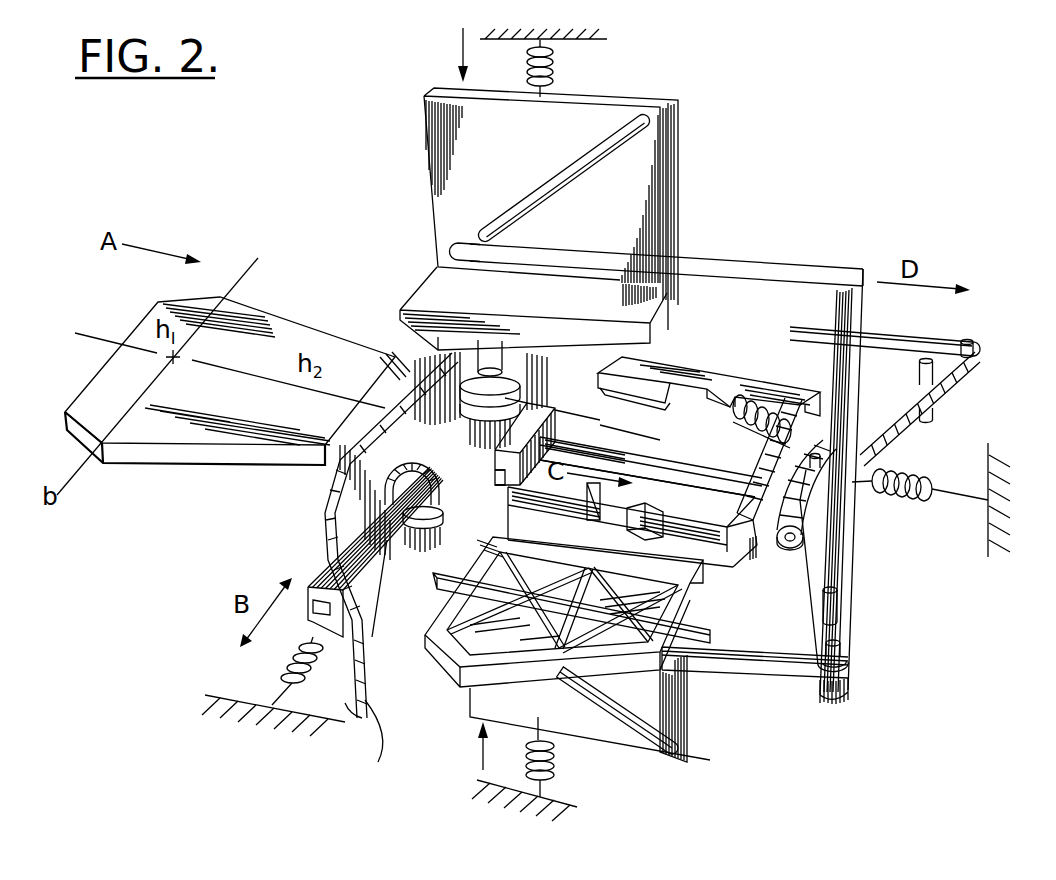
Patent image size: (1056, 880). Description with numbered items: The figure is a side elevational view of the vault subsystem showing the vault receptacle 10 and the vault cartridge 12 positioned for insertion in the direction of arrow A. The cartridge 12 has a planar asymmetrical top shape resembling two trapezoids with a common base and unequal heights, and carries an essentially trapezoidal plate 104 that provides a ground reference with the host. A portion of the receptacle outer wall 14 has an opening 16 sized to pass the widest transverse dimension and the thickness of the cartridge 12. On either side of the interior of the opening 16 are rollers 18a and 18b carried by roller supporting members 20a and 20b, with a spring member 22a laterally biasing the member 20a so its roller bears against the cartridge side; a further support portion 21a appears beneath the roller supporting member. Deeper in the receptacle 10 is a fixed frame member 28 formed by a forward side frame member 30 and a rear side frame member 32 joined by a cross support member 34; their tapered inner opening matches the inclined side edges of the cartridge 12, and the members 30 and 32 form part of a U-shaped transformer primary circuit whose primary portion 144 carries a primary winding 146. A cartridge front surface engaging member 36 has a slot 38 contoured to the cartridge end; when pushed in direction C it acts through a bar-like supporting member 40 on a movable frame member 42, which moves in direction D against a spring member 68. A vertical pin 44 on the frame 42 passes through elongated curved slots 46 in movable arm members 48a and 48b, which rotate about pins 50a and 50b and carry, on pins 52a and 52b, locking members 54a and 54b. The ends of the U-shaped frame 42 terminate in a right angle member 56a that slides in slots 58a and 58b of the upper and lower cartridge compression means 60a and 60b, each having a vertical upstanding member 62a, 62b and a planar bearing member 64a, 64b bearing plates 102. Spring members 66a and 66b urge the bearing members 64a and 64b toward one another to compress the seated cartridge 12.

The vault receptacle 10 is at (876, 191).
The vault cartridge 12 is at (92, 376).
The receptacle outer wall 14 is at (292, 740).
The opening 16 is at (367, 490).
The roller 18a is at (429, 537).
The roller 18b is at (481, 420).
The roller supporting member 20a is at (333, 568).
The roller supporting member 20b is at (534, 357).
The support 21a is at (396, 588).
The spring member 22a is at (290, 662).
The fixed frame member 28 is at (711, 402).
The forward side frame member 30 is at (667, 360).
The rear side frame member 32 is at (680, 436).
The cross support member 34 is at (783, 458).
The cartridge front surface engaging member 36 is at (535, 402).
The slot 38 is at (494, 474).
The bar-like supporting member 40 is at (567, 437).
The movable frame member 42 is at (757, 262).
The vertical pin 44 is at (828, 478).
The elongated curved slot 46 is at (803, 532).
The movable arm member 48a is at (856, 571).
The movable arm member 48b is at (890, 420).
The pin 50a is at (846, 612).
The pin 50b is at (940, 377).
The pin 52a is at (850, 650).
The pin 52b is at (970, 342).
The locking member 54a is at (773, 655).
The locking member 54b is at (918, 320).
The right angle member 56a is at (487, 232).
The slot 58a is at (647, 116).
The slot 58b is at (662, 757).
The upper cartridge compression means 60a is at (698, 137).
The lower cartridge compression means 60b is at (732, 726).
The vertical upstanding member 62a is at (679, 180).
The vertical upstanding member 62b is at (690, 750).
The planar bearing member 64a is at (432, 282).
The planar bearing member 64b is at (440, 645).
The spring member 66a is at (557, 62).
The spring member 66b is at (560, 772).
The spring member 68 is at (918, 476).
The plate 102 is at (580, 633).
The trapezoidal plate 104 is at (453, 622).
The primary portion 144 is at (769, 558).
The primary winding 146 is at (744, 397).